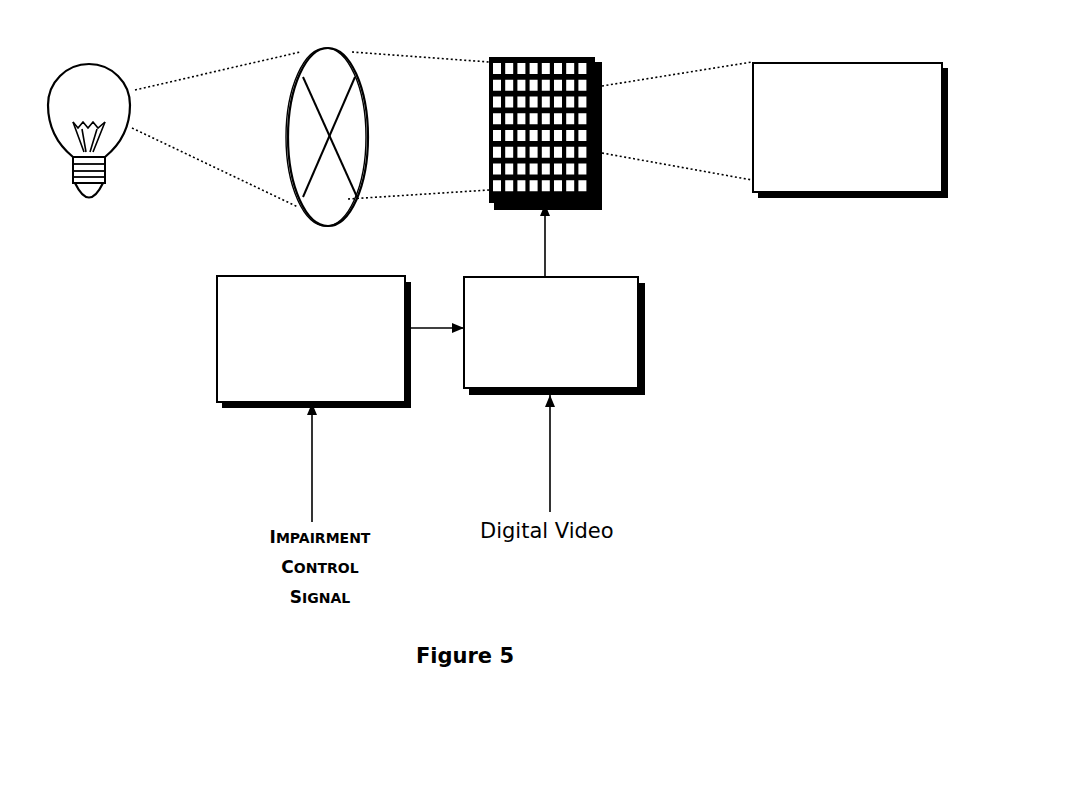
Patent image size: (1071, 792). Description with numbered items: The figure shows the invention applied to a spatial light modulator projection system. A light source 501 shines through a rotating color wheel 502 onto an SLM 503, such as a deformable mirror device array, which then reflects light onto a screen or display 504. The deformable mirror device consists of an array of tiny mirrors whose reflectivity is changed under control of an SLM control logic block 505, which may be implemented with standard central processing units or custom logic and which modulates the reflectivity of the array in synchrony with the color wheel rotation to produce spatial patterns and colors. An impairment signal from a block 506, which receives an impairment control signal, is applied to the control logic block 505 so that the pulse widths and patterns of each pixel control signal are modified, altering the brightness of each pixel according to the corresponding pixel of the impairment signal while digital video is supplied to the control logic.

The light source 501 is at (115, 62).
The rotating color wheel 502 is at (348, 47).
The SLM 503 is at (582, 57).
The screen or display 504 is at (800, 62).
The SLM control logic block 505 is at (647, 352).
The impairment signal block 506 is at (240, 263).